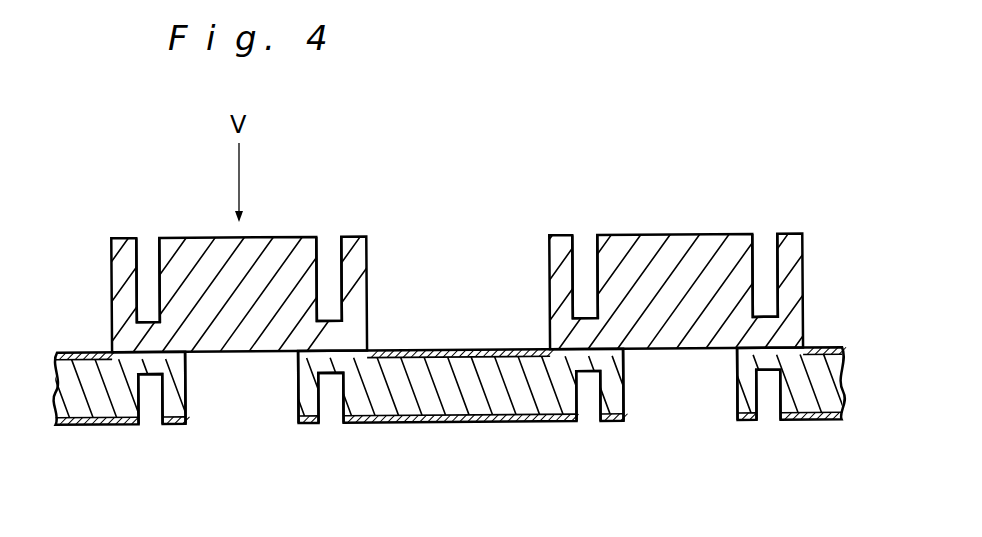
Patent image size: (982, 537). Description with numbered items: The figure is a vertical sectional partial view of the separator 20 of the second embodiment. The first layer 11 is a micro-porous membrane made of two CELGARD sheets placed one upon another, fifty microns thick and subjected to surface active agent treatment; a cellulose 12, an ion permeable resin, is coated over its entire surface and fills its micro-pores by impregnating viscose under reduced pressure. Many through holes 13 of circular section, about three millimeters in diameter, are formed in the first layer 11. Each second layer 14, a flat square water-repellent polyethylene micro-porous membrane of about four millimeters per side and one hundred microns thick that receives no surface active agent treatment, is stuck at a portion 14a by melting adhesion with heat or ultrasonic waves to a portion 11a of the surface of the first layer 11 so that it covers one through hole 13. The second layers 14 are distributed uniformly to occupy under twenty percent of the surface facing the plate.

The bonded substrate assembly 20 is at (501, 182).
The second layer 14 is at (293, 236).
The portion of second layer 14a is at (334, 322).
The first layer 11 is at (477, 397).
The portion of surface of first layer 11a is at (149, 378).
The cellulose 12 is at (455, 352).
The through hole 13 is at (239, 397).